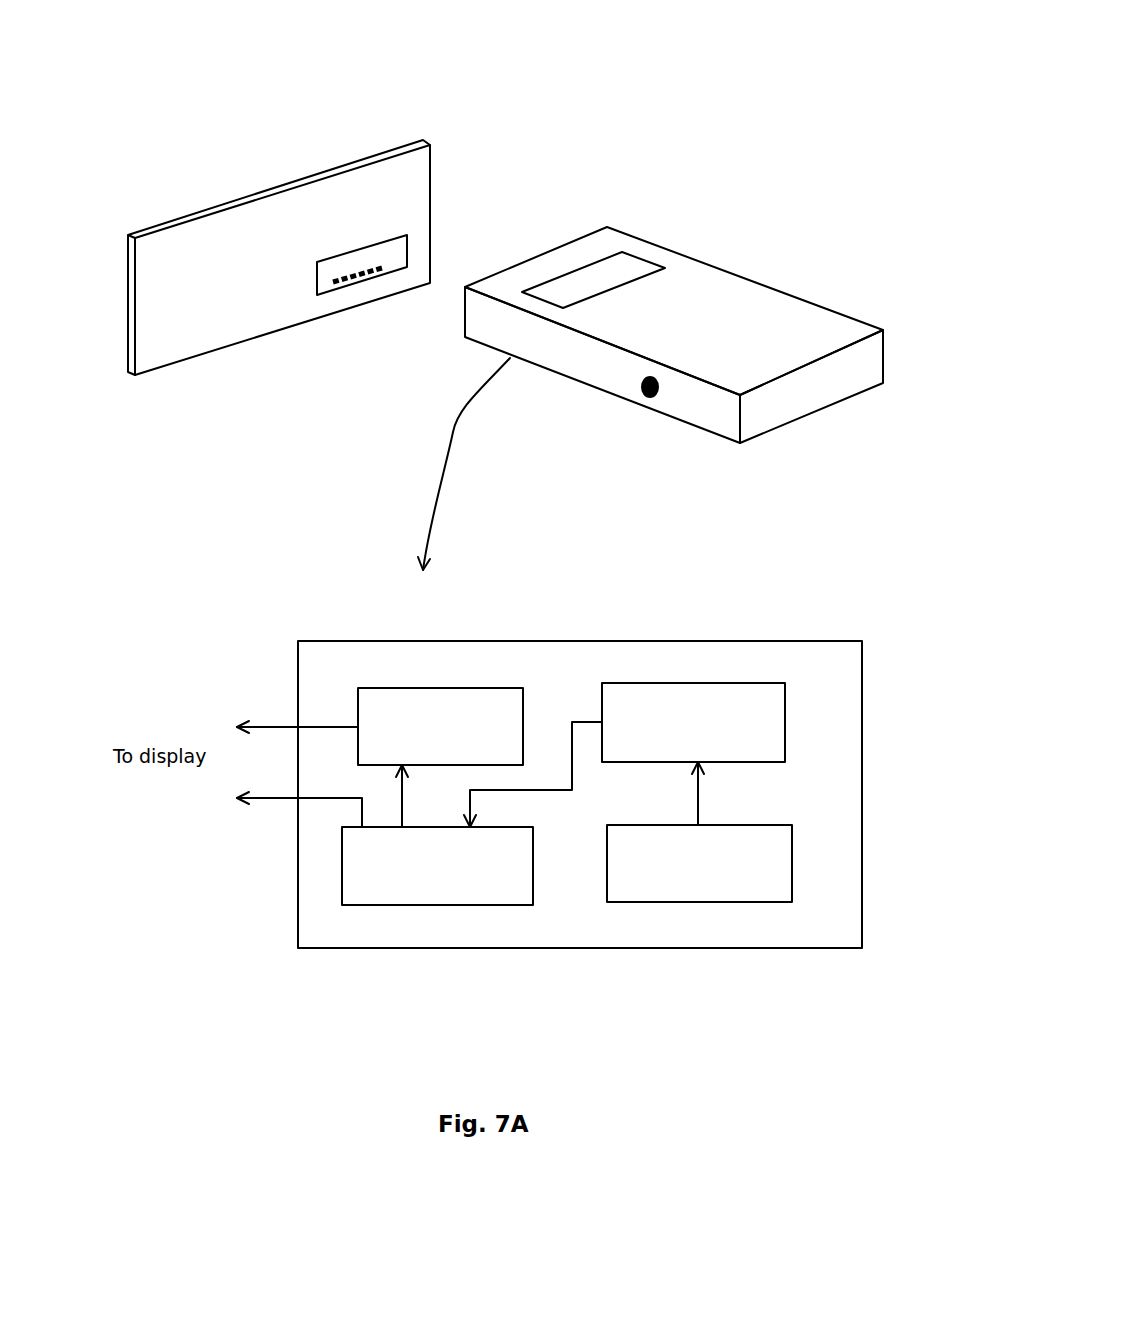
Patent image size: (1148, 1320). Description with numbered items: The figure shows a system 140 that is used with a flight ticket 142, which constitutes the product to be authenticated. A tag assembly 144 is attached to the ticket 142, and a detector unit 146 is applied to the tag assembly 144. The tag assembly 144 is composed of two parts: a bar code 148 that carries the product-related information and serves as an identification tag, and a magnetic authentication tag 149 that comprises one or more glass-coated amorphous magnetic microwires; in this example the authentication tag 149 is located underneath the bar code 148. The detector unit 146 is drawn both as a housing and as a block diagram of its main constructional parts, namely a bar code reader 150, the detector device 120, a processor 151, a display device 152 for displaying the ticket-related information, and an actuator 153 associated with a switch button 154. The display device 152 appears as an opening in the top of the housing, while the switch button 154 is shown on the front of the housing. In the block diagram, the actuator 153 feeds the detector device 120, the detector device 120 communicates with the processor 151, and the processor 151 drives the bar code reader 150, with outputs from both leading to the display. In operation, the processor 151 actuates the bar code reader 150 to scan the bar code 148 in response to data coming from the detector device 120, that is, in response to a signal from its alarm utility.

The system 140 is at (567, 123).
The flight ticket 142 is at (263, 187).
The tag assembly 144 is at (375, 240).
The detector unit 146 is at (705, 260).
The bar code 148 is at (323, 272).
The magnetic authentication tag 149 is at (383, 272).
The bar code reader 150 is at (378, 688).
The processor 151 is at (407, 905).
The display device 152 is at (605, 277).
The actuator 153 is at (793, 855).
The switch button 154 is at (642, 388).
The detector device 120 is at (765, 683).